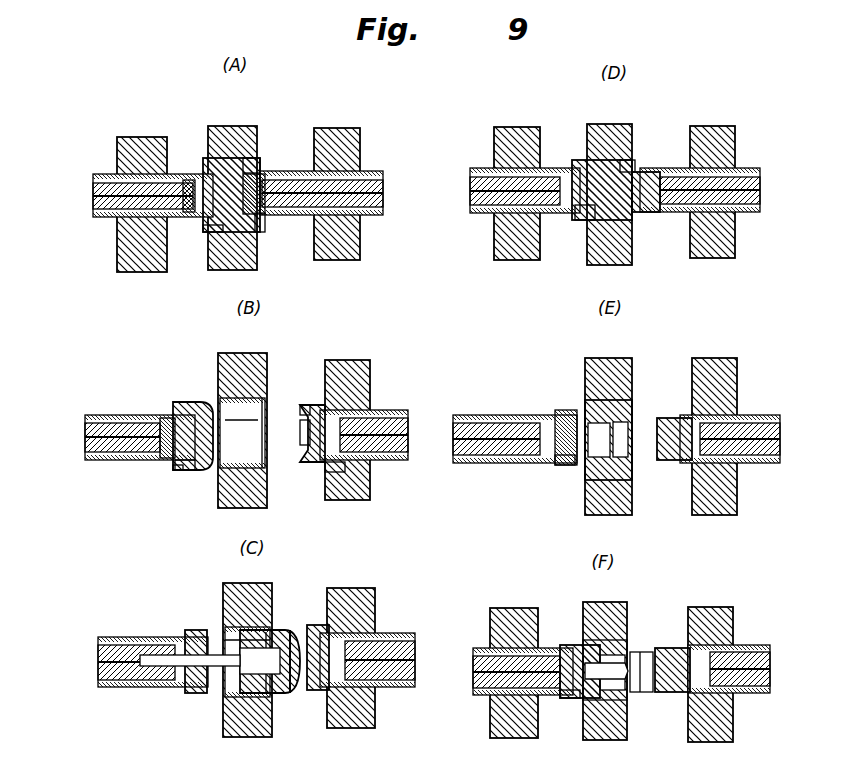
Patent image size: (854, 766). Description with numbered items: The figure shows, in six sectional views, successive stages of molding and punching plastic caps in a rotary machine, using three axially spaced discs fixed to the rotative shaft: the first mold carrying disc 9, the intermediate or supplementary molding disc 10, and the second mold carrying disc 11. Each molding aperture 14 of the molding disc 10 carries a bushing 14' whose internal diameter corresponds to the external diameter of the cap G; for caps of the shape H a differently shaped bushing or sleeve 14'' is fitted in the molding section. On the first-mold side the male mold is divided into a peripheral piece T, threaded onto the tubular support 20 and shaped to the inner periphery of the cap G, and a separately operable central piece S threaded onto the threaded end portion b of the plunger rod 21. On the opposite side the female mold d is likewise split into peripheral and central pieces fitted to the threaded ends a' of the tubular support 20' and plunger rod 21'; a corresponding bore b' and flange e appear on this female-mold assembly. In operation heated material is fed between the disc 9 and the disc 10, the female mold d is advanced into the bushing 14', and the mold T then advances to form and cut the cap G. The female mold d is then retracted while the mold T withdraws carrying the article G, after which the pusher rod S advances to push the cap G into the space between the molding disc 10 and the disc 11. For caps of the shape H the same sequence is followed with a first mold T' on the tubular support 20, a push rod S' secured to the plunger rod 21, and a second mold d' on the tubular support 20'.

The mold carrying disc 9 is at (142, 140).
The intermediate molding disc 10 is at (225, 128).
The second mold carrying disc 11 is at (330, 140).
The molding aperture 14 is at (275, 223).
The bushing 14' is at (448, 405).
The holder insert 14'' is at (625, 550).
The tubular support 20 is at (335, 516).
The tubular support 20' is at (552, 524).
The plunger rod 21 is at (325, 309).
The plunger rod 21' is at (520, 170).
The central mold piece S is at (406, 445).
The push rod S' is at (593, 297).
The peripheral mold piece T is at (360, 484).
The first mold T' is at (574, 363).
The plastic cap G is at (255, 165).
The cap H is at (615, 430).
The threaded end portion b is at (184, 329).
The bore b' is at (337, 493).
The female mold d is at (473, 451).
The second mold d' is at (661, 432).
The flange e is at (305, 430).
The threaded end a' is at (302, 394).